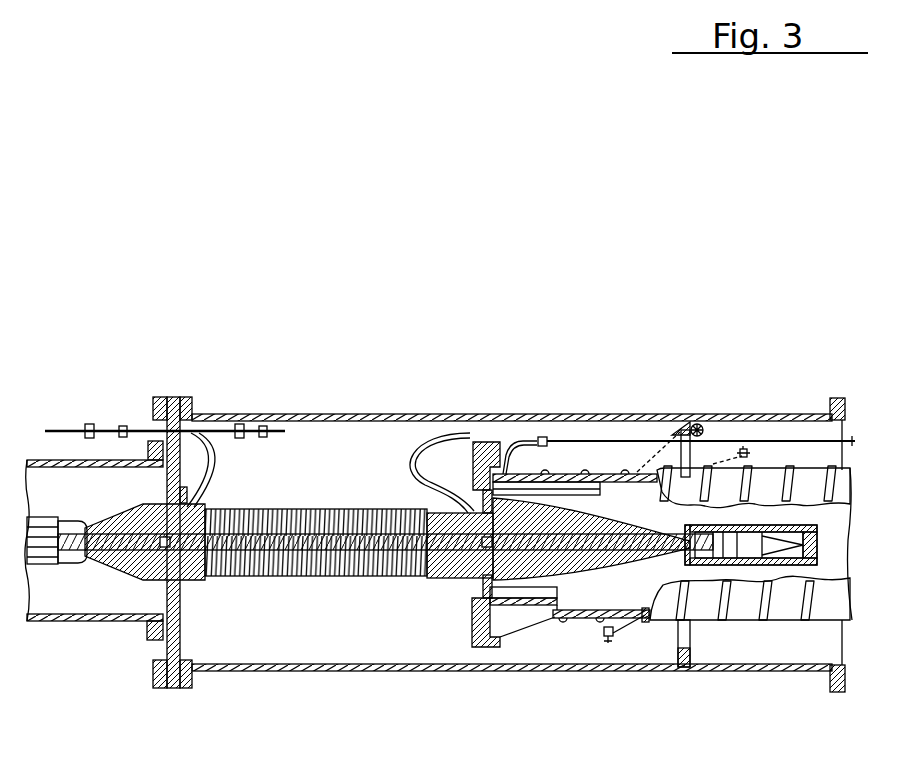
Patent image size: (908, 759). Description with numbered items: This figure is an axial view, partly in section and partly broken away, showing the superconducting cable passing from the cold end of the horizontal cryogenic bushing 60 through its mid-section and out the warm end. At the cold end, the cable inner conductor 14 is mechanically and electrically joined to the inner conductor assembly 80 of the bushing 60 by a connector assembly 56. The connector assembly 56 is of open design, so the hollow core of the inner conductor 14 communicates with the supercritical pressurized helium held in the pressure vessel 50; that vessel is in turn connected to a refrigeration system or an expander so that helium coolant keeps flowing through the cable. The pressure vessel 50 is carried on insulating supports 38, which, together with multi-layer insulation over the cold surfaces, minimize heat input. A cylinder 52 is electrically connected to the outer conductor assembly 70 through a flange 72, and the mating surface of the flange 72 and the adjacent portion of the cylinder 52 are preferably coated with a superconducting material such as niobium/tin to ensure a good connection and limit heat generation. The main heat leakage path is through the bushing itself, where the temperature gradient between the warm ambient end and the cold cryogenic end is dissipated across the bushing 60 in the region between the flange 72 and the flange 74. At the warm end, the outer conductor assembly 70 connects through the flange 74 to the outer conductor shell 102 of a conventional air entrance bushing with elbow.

The cable inner conductor 14 is at (805, 545).
The insulating supports 38 is at (686, 432).
The pressure vessel 50 is at (745, 620).
The cylinder 52 is at (563, 474).
The connector assembly 56 is at (743, 449).
The horizontal cryogenic bushing 60 is at (597, 572).
The outer conductor assembly 70 is at (302, 507).
The flange 72 is at (472, 598).
The flange 74 is at (182, 598).
The inner conductor assembly 80 is at (548, 575).
The outer conductor shell 102 is at (82, 622).